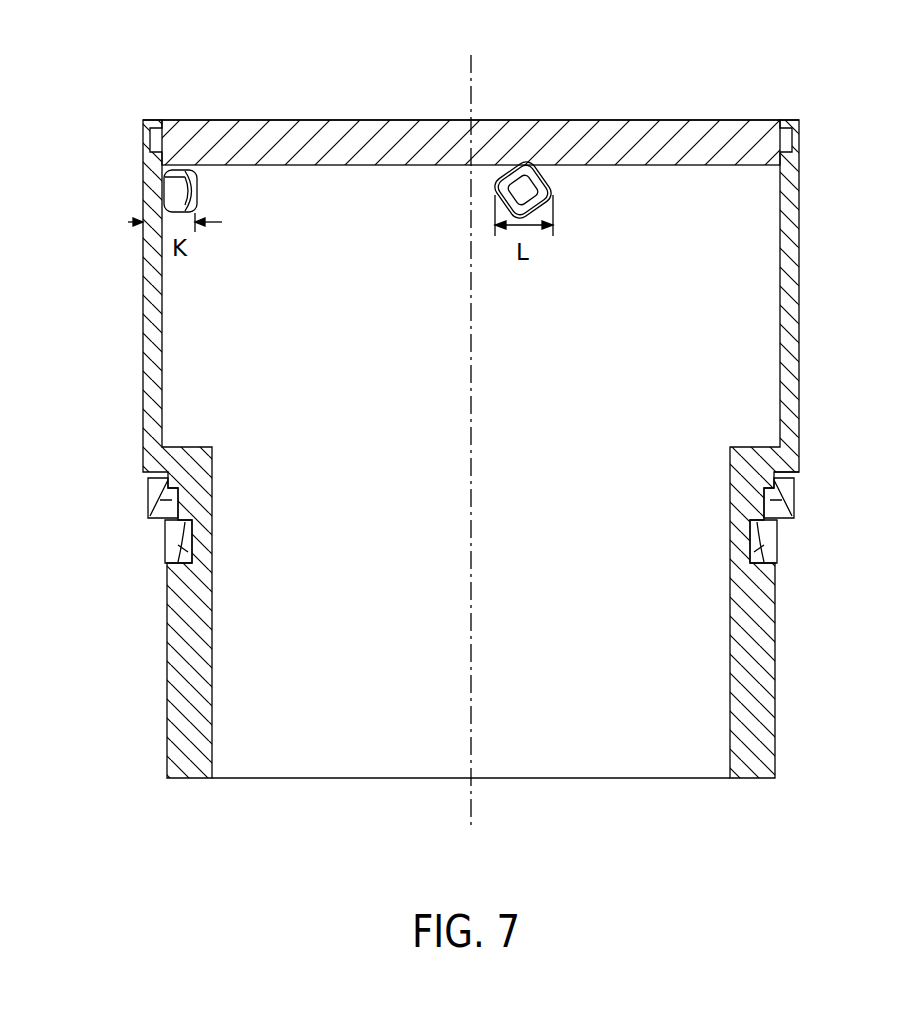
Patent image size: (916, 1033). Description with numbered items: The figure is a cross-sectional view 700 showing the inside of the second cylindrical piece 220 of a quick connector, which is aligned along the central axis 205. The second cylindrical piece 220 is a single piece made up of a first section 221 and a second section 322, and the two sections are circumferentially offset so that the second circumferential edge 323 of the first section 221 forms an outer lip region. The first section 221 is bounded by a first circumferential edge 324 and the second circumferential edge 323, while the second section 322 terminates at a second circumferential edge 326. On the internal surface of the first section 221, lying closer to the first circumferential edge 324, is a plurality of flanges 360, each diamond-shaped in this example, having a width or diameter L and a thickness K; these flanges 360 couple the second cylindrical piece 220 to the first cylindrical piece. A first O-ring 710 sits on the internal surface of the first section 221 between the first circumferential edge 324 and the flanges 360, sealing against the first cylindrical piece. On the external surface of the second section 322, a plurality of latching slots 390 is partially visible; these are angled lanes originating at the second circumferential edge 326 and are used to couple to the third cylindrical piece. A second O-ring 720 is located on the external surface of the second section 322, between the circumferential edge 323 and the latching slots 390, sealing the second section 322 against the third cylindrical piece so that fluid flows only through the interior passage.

The cross-sectional view 700 is at (76, 107).
The central axis 205 is at (468, 92).
The second cylindrical piece 220 is at (397, 808).
The first O-ring 710 is at (752, 150).
The first circumferential edge 324 is at (703, 120).
The flanges 360 is at (172, 197).
The first section 221 is at (316, 347).
The second section 322 is at (341, 664).
The second circumferential edge 323 is at (775, 453).
The second circumferential edge 326 is at (608, 778).
The second O-ring 720 is at (160, 500).
The latching slots 390 is at (185, 549).